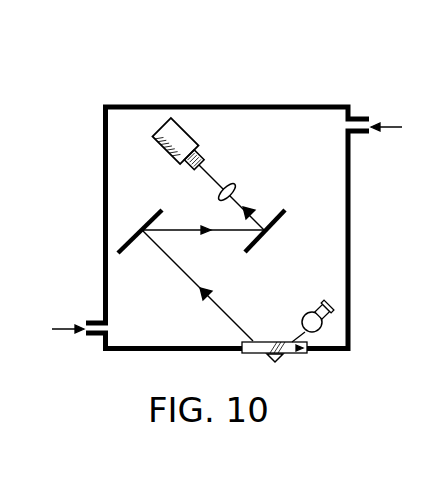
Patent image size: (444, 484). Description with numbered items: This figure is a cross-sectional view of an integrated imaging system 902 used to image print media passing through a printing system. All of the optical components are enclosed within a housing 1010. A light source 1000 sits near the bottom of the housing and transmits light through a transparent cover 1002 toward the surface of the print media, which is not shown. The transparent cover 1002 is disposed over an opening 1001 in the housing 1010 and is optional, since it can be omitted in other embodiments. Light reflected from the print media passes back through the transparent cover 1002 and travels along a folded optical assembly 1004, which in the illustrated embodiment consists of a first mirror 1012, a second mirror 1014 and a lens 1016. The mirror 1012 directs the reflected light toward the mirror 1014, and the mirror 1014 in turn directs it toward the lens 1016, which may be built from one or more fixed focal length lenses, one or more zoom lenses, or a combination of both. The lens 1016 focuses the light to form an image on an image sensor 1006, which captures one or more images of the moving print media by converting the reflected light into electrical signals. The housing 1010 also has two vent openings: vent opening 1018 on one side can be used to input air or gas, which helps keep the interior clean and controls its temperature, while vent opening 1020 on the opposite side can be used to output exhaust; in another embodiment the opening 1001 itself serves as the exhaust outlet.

The integrated imaging system 902 is at (114, 68).
The housing 1010 is at (102, 178).
The vent opening 1018 is at (392, 126).
The vent opening 1020 is at (60, 328).
The folded optical assembly 1004 is at (164, 304).
The mirror 1012 is at (156, 206).
The mirror 1014 is at (283, 219).
The image sensor 1006 is at (192, 134).
The lens 1016 is at (231, 184).
The transparent cover 1002 is at (256, 355).
The opening 1001 is at (311, 355).
The light source 1000 is at (306, 312).